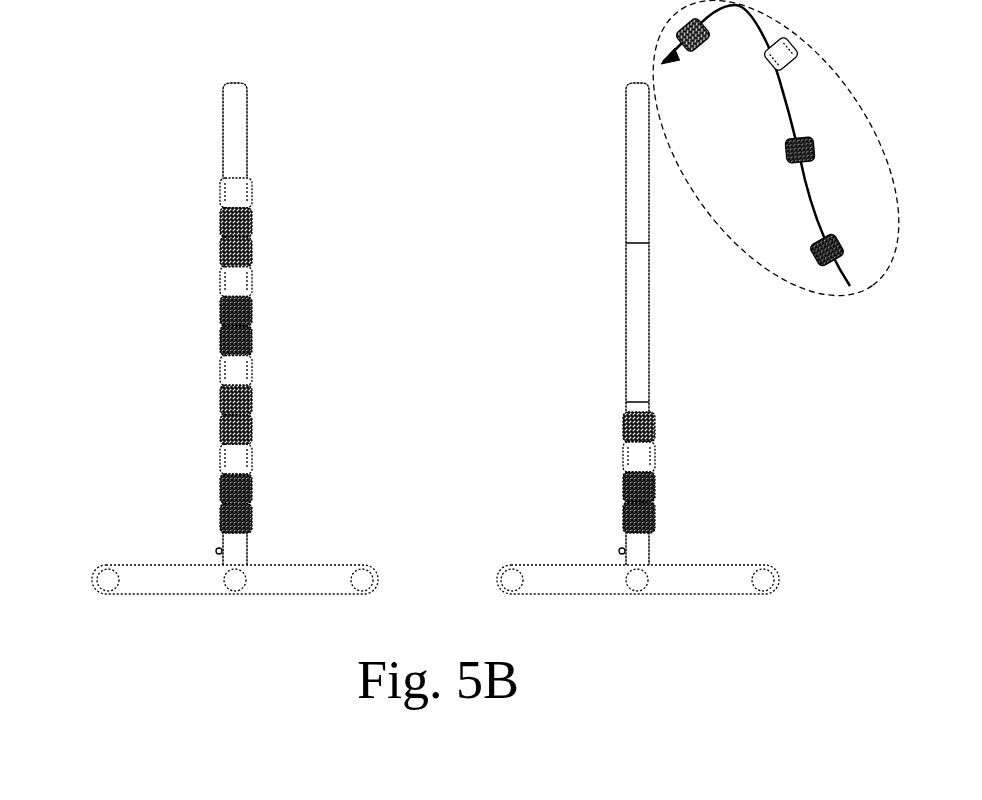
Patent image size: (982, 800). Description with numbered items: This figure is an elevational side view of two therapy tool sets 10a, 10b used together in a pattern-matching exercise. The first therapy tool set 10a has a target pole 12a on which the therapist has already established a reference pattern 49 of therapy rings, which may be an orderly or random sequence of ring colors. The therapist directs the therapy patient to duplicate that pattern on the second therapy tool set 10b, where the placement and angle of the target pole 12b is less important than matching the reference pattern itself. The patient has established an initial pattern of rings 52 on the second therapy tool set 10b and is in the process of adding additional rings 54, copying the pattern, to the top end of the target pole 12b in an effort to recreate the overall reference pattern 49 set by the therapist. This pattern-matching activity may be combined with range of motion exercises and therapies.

The therapy tool set 10a is at (125, 352).
The therapy tool set 10b is at (558, 354).
The target pole 12a is at (207, 131).
The target pole 12b is at (613, 137).
The reference pattern 49 is at (264, 178).
The initial pattern of rings 52 is at (615, 403).
The additional rings 54 is at (713, 232).